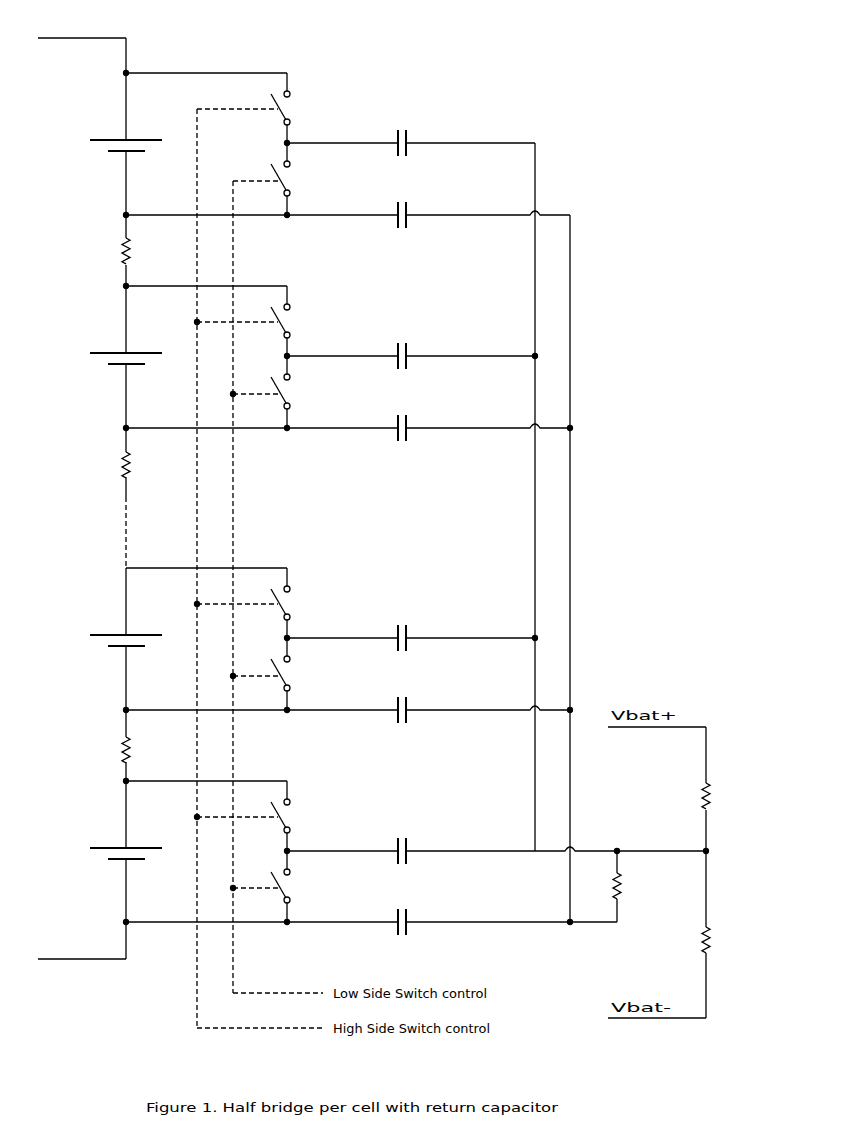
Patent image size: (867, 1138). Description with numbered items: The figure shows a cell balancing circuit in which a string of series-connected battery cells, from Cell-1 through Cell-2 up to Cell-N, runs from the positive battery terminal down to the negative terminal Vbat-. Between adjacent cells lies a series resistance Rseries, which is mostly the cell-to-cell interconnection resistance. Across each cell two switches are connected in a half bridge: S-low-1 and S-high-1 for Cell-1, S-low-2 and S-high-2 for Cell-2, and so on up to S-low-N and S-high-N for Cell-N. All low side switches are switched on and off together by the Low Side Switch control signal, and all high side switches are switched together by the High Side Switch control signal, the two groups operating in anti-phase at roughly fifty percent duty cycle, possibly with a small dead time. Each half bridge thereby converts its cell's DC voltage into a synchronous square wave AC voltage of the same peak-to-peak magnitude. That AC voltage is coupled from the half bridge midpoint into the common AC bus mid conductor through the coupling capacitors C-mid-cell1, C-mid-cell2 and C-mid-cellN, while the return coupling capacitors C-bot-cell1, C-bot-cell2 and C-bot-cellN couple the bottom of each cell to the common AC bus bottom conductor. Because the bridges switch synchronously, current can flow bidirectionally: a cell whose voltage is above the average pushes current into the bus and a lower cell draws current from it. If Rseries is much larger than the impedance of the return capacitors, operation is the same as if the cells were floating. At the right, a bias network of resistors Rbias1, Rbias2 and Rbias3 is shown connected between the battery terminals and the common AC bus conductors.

The battery negative terminal Vbat- is at (82, 940).
The series resistance Rseries is at (97, 500).
The cell N Cell-N is at (162, 144).
The battery cell 2 Cell-2 is at (162, 640).
The cell 1 Cell-1 is at (162, 852).
The high side switch for cell N S-high-N is at (275, 108).
The low side switch for cell N S-low-N is at (290, 180).
The high side switch for cell 2 S-high-2 is at (273, 603).
The low side switch for cell 2 S-low-2 is at (288, 675).
The high side switch for cell 1 S-high-1 is at (273, 816).
The low side switch for cell 1 S-low-1 is at (288, 888).
The mid coupling capacitor for cell N C-mid-cellN is at (410, 142).
The return coupling capacitor for cell N C-bot-cellN is at (428, 214).
The mid capacitor for cell 2 C-mid-cell2 is at (411, 637).
The bottom return capacitor for cell 2 C-bot-cell2 is at (430, 709).
The mid capacitor for cell 1 C-mid-cell1 is at (496, 850).
The bottom return capacitor for cell 1 C-bot-cell1 is at (452, 921).
The bias resistor 1 Rbias1 is at (681, 790).
The bias resistor 2 Rbias2 is at (681, 934).
The bias resistor 3 Rbias3 is at (644, 886).